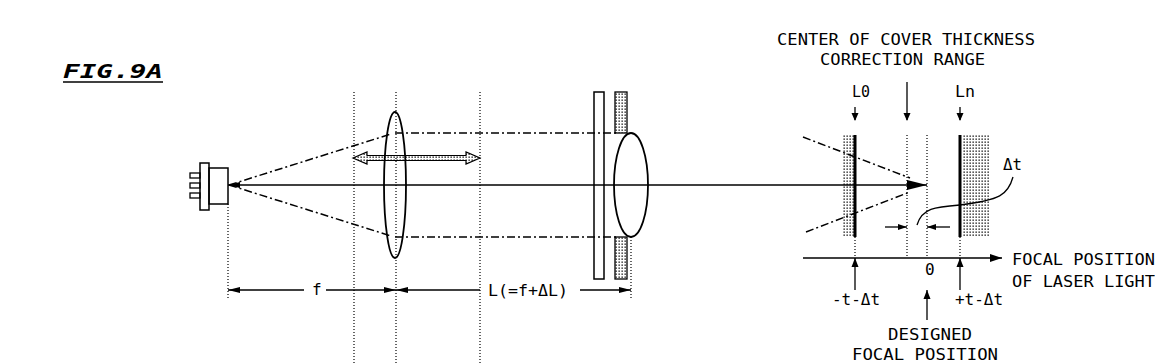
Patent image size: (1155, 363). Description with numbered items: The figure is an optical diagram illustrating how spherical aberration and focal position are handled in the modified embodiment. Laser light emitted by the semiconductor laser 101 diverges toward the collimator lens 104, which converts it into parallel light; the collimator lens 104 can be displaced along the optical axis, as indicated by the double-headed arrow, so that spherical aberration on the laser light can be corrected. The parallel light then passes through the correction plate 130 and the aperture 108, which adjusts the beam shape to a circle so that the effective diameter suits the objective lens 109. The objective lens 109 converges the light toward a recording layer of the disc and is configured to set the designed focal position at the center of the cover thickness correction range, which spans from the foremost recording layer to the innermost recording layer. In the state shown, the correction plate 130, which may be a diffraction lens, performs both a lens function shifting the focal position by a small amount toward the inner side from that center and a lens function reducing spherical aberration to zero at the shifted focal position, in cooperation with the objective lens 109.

The semiconductor laser 101 is at (220, 165).
The collimator lens 104 is at (398, 102).
The correction plate 130 is at (593, 105).
The aperture 108 is at (628, 102).
The objective lens 109 is at (648, 155).